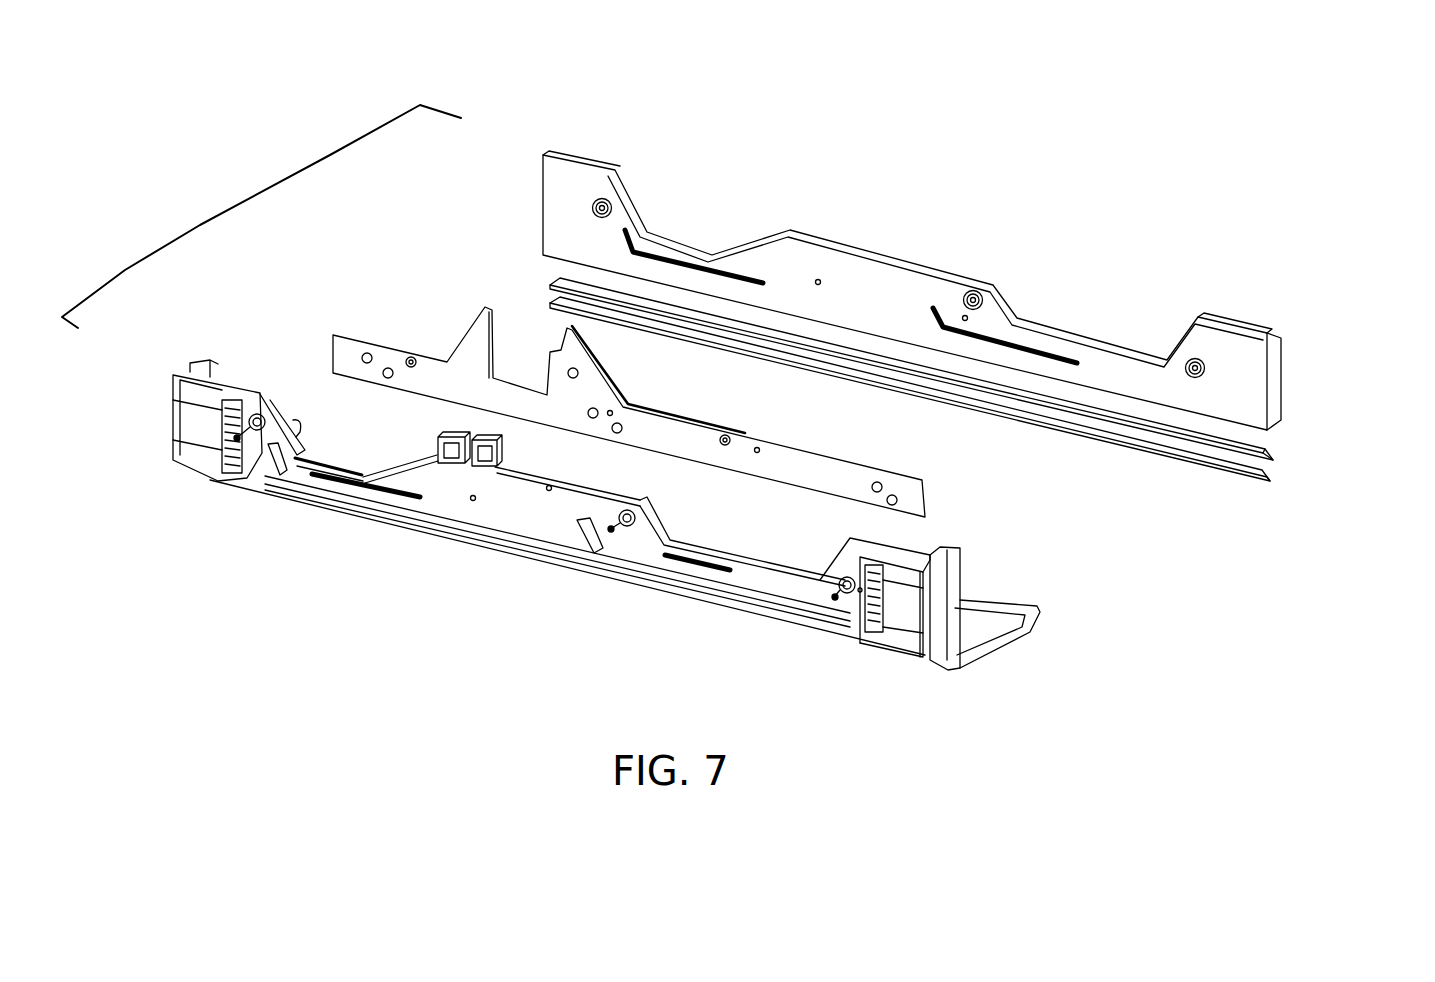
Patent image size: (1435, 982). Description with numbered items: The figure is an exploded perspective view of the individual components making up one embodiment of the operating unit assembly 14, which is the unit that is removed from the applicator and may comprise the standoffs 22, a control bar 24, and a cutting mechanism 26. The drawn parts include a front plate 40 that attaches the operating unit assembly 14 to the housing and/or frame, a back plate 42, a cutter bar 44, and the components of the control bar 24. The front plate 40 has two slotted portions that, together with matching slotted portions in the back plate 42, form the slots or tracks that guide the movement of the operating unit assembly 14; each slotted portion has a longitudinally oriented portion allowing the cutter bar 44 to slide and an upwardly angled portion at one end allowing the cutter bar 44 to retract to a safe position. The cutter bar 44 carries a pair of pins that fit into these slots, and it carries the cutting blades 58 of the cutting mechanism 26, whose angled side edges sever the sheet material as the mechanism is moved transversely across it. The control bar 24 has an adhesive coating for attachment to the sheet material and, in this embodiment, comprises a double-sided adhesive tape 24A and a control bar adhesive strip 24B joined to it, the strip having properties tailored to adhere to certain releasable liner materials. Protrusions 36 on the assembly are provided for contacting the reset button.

The operating unit assembly 14 is at (257, 193).
The standoffs 22 is at (609, 534).
The control bar 24 is at (976, 416).
The double-sided adhesive tape 24A is at (1263, 450).
The control bar adhesive strip 24B is at (1213, 467).
The cutting mechanism 26 is at (960, 492).
The protrusions 36 is at (455, 437).
The front plate 40 is at (1247, 330).
The back plate 42 is at (903, 550).
The cutter bar 44 is at (810, 478).
The cutting blades 58 is at (688, 460).